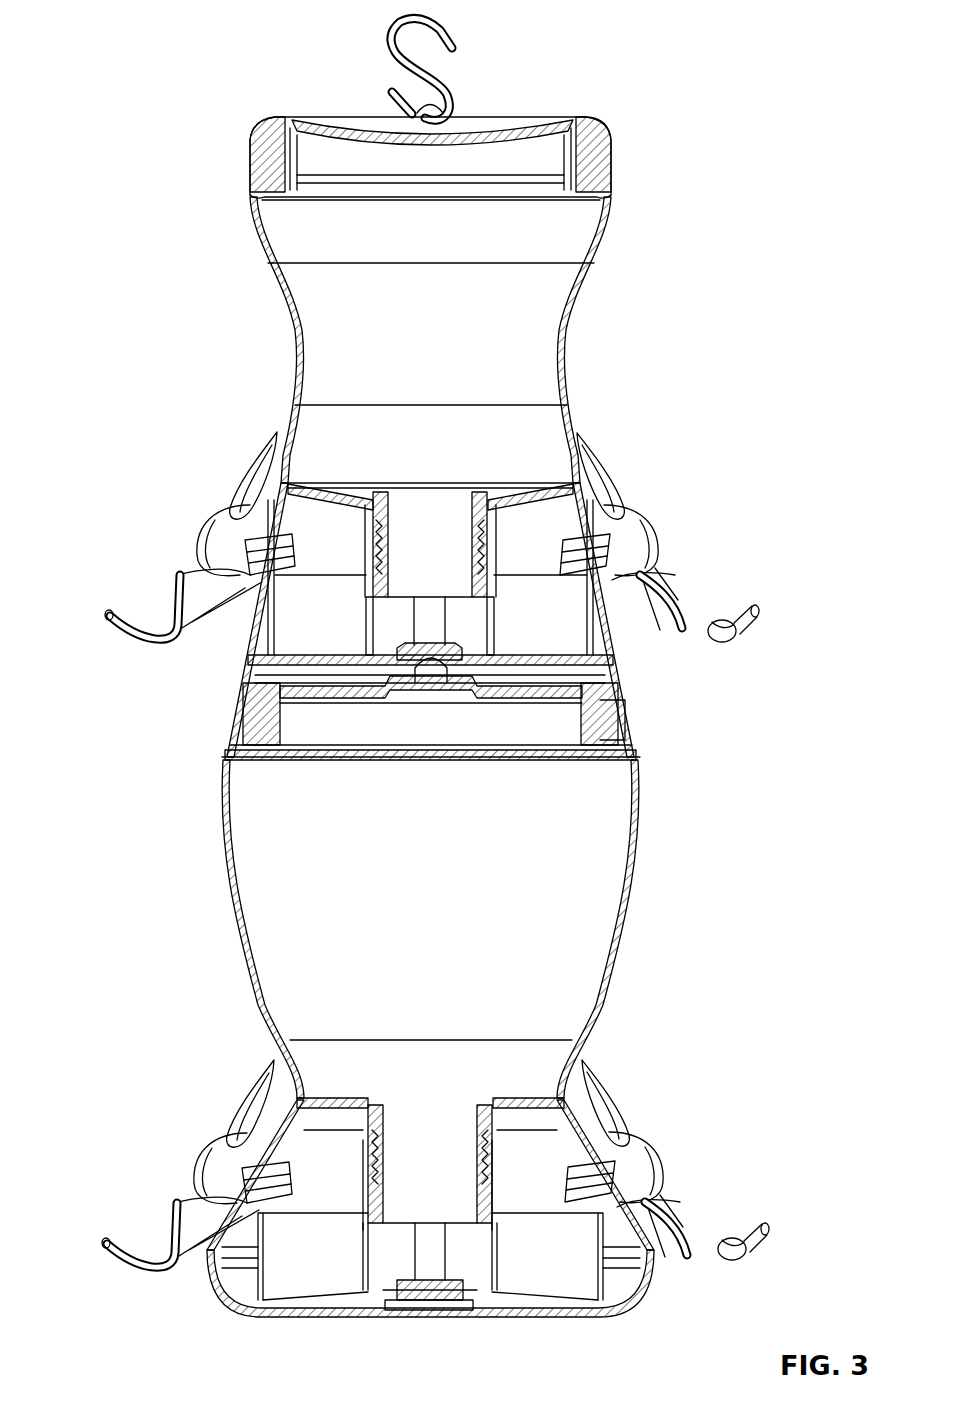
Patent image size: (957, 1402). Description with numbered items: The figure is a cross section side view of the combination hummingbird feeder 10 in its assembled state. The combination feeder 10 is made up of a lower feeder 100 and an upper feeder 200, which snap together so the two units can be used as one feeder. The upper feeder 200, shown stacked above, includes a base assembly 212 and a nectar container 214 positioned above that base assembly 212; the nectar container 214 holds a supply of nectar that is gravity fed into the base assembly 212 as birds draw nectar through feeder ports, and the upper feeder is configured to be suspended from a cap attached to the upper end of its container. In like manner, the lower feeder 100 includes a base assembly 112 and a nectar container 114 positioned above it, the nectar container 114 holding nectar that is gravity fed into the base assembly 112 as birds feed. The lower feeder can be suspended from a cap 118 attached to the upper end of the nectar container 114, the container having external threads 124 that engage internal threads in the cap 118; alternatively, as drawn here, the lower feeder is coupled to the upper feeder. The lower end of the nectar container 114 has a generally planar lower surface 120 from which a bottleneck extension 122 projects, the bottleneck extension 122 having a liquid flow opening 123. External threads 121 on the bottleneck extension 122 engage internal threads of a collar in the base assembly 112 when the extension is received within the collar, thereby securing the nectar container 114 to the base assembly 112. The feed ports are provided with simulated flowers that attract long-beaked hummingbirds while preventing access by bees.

The combination hummingbird feeder 10 is at (738, 42).
The upper feeder 200 is at (663, 400).
The nectar container 214 is at (592, 270).
The base assembly 212 is at (152, 490).
The lower feeder 100 is at (697, 990).
The nectar container 114 is at (643, 847).
The base assembly 112 is at (695, 1277).
The cap 118 is at (622, 720).
The external threads 124 is at (614, 742).
The lower surface 120 is at (328, 1095).
The bottleneck extension 122 is at (483, 1098).
The external threads 121 is at (485, 1158).
The liquid flow opening 123 is at (463, 1223).